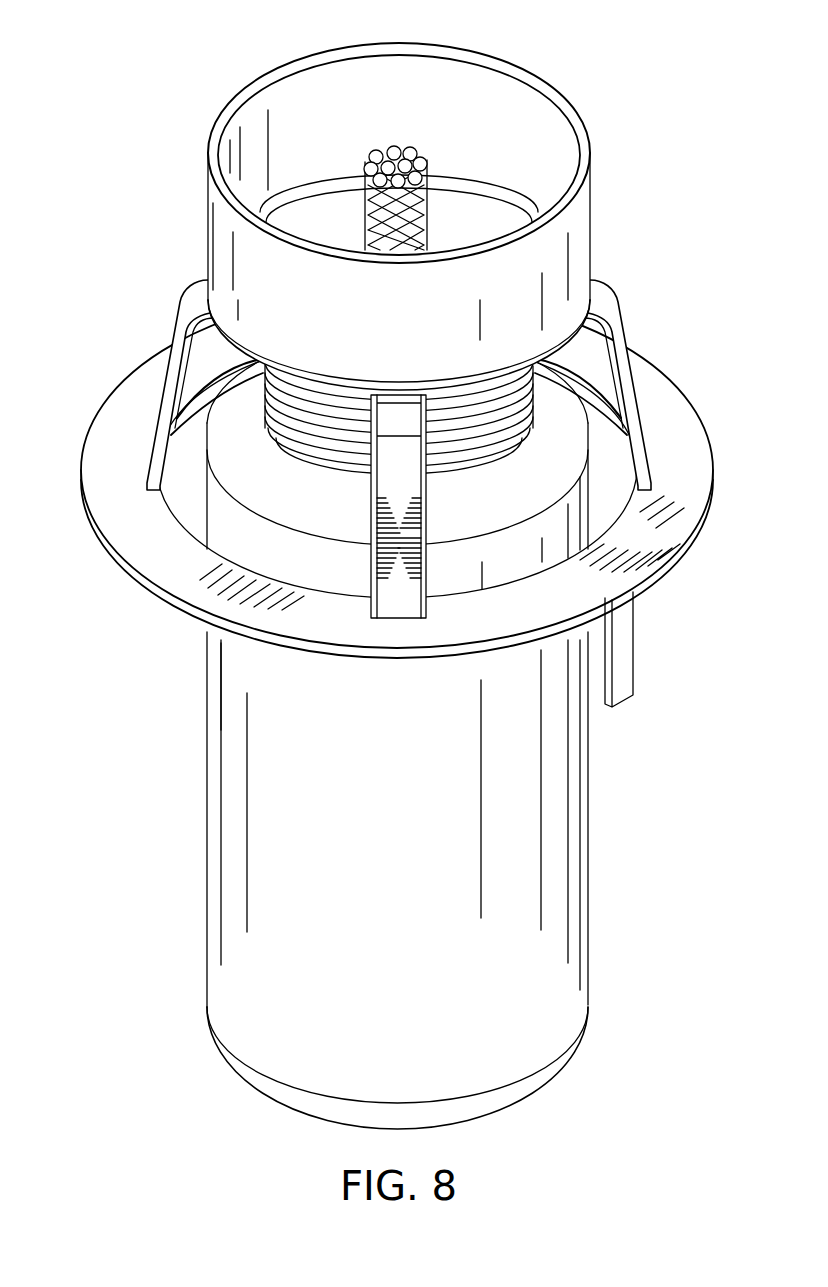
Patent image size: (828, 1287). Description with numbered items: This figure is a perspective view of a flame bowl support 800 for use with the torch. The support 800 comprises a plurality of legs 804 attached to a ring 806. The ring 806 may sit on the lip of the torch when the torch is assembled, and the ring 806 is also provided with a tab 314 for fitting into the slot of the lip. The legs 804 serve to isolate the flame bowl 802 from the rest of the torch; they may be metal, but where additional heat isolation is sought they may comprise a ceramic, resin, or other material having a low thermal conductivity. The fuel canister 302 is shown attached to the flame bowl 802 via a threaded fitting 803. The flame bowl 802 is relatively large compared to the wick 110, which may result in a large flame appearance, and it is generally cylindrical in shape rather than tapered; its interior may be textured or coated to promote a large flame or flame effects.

The wick 110 is at (410, 148).
The fuel canister 302 is at (207, 812).
The tab 314 is at (637, 647).
The flame bowl support 800 is at (133, 408).
The flame bowl 802 is at (208, 212).
The threaded fitting 803 is at (308, 458).
The legs 804 is at (173, 333).
The ring 806 is at (140, 543).